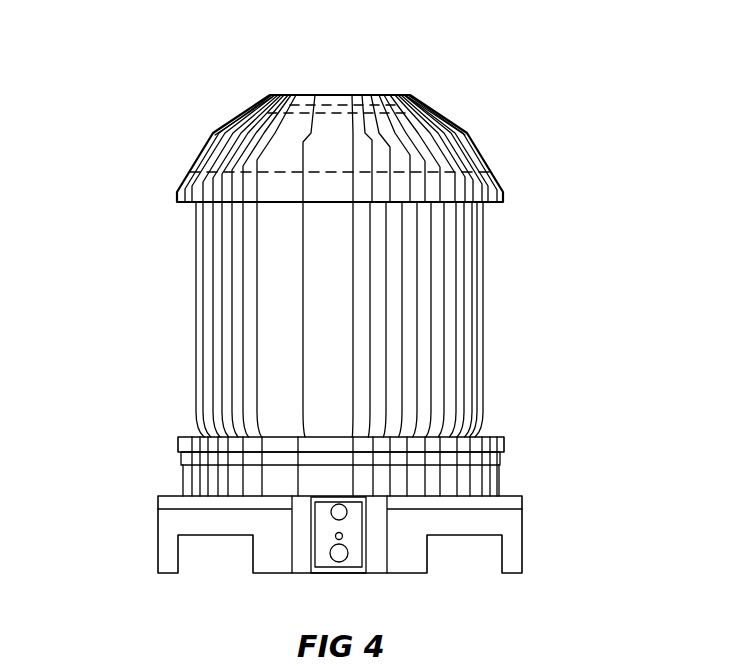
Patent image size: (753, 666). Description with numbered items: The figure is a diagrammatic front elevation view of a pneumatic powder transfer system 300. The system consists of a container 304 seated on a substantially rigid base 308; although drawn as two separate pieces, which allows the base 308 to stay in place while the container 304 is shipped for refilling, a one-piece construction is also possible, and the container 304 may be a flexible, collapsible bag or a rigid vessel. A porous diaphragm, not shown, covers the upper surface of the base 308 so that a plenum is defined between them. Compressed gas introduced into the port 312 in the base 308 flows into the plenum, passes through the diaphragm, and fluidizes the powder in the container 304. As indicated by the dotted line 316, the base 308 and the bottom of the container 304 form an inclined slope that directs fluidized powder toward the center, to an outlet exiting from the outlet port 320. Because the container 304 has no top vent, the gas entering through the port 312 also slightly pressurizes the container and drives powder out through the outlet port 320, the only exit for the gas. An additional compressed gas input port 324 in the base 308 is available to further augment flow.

The pneumatic powder transfer system 300 is at (160, 86).
The container 304 is at (195, 240).
The base 308 is at (170, 518).
The port 312 is at (330, 512).
The dotted line 316 is at (207, 442).
The outlet port 320 is at (329, 553).
The additional compressed gas input port 324 is at (346, 537).